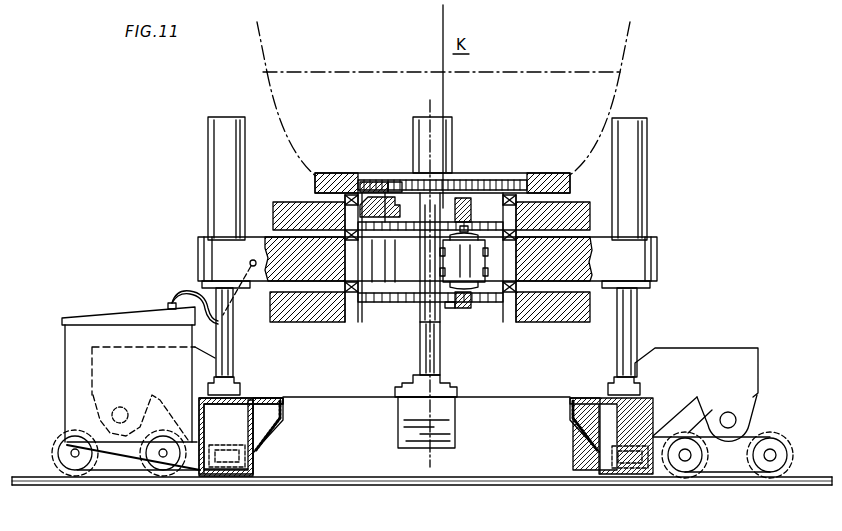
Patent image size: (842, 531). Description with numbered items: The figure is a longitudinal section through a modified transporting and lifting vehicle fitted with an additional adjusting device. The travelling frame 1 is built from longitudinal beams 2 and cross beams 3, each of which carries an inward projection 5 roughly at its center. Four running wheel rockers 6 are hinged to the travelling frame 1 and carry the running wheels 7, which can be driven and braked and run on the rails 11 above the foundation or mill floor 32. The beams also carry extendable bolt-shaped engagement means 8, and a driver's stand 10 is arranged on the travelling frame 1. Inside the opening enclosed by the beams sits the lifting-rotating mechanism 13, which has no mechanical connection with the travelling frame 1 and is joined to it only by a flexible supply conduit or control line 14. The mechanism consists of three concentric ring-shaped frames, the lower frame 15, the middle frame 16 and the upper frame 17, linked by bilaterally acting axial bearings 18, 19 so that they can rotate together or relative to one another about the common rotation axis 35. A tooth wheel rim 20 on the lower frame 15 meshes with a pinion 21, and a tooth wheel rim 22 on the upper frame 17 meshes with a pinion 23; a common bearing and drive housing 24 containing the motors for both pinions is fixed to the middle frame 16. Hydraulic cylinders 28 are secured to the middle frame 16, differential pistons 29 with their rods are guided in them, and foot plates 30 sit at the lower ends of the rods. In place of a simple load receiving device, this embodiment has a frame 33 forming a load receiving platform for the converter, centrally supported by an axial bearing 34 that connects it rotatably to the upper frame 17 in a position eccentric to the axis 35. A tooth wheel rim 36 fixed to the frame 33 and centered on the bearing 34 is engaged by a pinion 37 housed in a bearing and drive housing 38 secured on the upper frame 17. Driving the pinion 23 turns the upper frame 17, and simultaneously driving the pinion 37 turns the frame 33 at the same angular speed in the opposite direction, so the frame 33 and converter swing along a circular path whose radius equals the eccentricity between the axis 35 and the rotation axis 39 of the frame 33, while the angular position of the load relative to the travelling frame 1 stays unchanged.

The travelling frame 1 is at (734, 345).
The longitudinal beam 2 is at (505, 437).
The cross beam 3 is at (232, 428).
The inward projection 5 is at (265, 413).
The running wheel rocker 6 is at (122, 472).
The running wheel 7 is at (72, 478).
The bolt-shaped engagement means 8 is at (220, 472).
The driver's stand 10 is at (95, 333).
The rail 11 is at (31, 480).
The lifting-rotating mechanism 13 is at (418, 268).
The flexible supply conduit or control line 14 is at (178, 291).
The first or lower frame 15 is at (303, 300).
The second or middle frame 16 is at (290, 300).
The third or upper frame 17 is at (290, 198).
The axial bearing 18 is at (360, 232).
The axial bearing 19 is at (340, 262).
The tooth wheel rim 20 is at (380, 302).
The pinion 21 is at (470, 308).
The tooth wheel rim 22 is at (497, 195).
The pinion 23 is at (463, 197).
The bearing and drive housing 24 is at (450, 308).
The hydraulic cylinder 28 is at (222, 135).
The differential piston 29 is at (226, 350).
The foot plate 30 is at (234, 384).
The foundation 32 is at (368, 488).
The frame 33 is at (565, 176).
The axial bearing 34 is at (535, 180).
The common rotation axis 35 is at (428, 108).
The tooth wheel rim 36 is at (405, 188).
The pinion 37 is at (372, 185).
The bearing and drive housing 38 is at (352, 183).
The rotation axis 39 is at (441, 35).